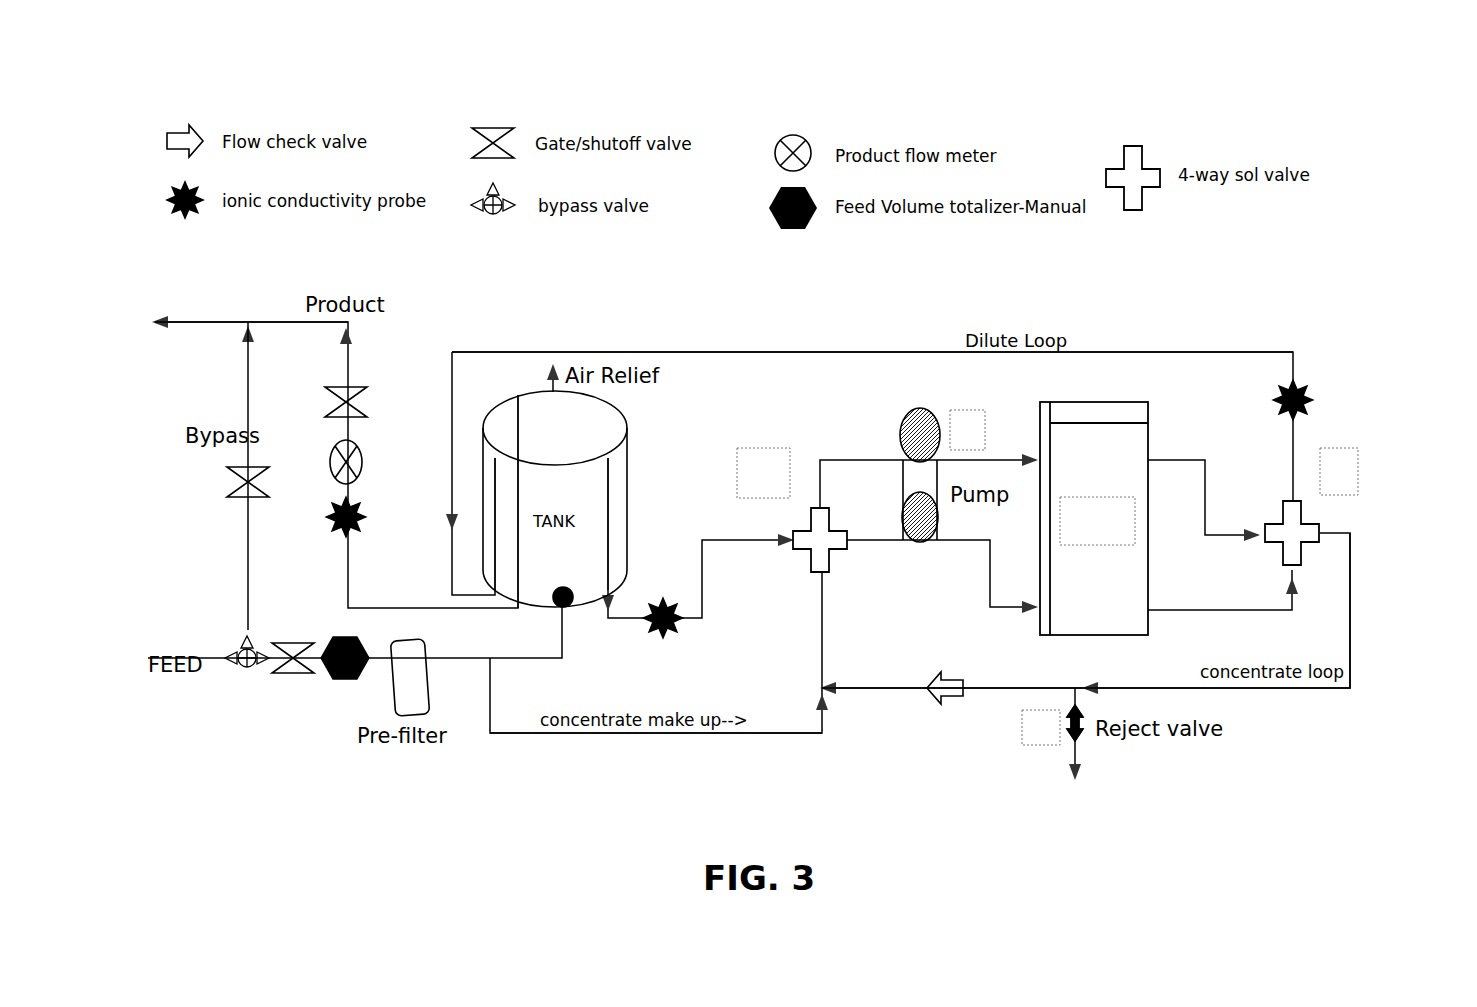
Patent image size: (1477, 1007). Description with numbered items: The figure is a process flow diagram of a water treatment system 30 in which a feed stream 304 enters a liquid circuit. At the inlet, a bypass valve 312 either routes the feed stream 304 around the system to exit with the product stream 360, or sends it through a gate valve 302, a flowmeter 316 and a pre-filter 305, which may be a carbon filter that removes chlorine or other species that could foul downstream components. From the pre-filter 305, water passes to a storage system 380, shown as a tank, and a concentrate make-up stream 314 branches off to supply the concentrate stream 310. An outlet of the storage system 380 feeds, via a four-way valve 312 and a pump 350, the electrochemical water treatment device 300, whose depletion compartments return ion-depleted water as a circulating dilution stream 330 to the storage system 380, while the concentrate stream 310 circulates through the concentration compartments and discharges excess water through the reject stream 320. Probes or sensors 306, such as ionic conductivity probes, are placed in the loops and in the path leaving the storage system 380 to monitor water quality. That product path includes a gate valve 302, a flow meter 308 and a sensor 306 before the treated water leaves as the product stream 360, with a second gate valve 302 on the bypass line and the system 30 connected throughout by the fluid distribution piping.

The treatment system 30 is at (1288, 268).
The electrochemical water treatment device 300 is at (1094, 518).
The gate valve 302 is at (372, 406).
The feed stream 304 is at (180, 652).
The pre-filter 305 is at (420, 689).
The probe or sensor 306 is at (370, 518).
The flow meter 308 is at (370, 466).
The concentrate stream 310 is at (1366, 597).
The bypass valve 312 is at (236, 676).
The concentrate make-up stream 314 is at (718, 740).
The flowmeter 316 is at (339, 692).
The reject stream 320 is at (1092, 748).
The dilution stream 330 is at (1100, 346).
The pump 350 is at (893, 444).
The product stream 360 is at (198, 318).
The storage system 380 is at (636, 472).